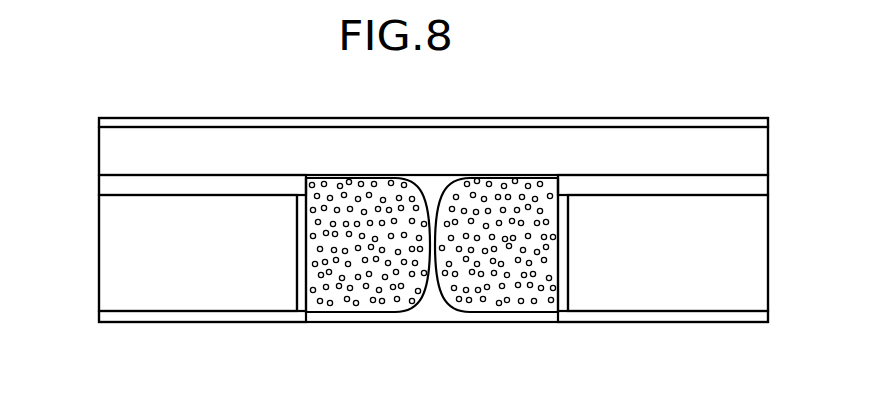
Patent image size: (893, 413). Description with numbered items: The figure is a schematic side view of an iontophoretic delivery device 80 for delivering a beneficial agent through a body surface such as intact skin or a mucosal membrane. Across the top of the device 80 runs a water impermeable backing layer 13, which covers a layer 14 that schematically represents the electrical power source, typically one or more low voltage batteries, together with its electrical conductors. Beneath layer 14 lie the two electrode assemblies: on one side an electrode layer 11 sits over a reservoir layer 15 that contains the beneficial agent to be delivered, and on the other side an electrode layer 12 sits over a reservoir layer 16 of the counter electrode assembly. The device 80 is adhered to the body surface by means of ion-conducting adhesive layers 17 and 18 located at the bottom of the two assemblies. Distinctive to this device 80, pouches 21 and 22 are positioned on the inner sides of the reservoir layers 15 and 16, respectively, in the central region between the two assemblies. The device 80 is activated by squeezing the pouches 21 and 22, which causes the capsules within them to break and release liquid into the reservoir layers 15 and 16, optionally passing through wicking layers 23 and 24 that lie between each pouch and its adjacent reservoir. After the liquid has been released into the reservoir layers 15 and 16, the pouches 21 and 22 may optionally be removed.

The iontophoretic delivery device 80 is at (255, 104).
The water impermeable backing layer 13 is at (704, 120).
The layer 14 is at (755, 152).
The electrode layer 11 is at (110, 184).
The electrode layer 12 is at (757, 188).
The reservoir layer 15 is at (110, 235).
The reservoir layer 16 is at (755, 252).
The ion-conducting adhesive layer 17 is at (115, 317).
The ion-conducting adhesive layer 18 is at (685, 317).
The pouch 21 is at (358, 298).
The pouch 22 is at (508, 298).
The wicking layer 23 is at (303, 287).
The wicking layer 24 is at (563, 282).